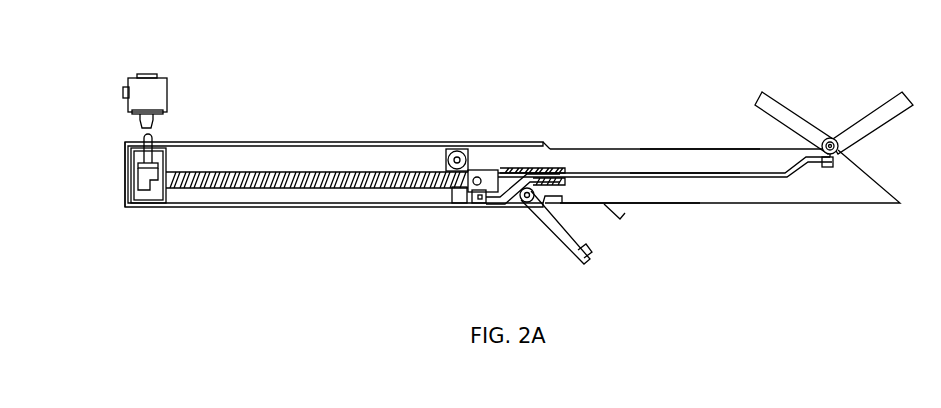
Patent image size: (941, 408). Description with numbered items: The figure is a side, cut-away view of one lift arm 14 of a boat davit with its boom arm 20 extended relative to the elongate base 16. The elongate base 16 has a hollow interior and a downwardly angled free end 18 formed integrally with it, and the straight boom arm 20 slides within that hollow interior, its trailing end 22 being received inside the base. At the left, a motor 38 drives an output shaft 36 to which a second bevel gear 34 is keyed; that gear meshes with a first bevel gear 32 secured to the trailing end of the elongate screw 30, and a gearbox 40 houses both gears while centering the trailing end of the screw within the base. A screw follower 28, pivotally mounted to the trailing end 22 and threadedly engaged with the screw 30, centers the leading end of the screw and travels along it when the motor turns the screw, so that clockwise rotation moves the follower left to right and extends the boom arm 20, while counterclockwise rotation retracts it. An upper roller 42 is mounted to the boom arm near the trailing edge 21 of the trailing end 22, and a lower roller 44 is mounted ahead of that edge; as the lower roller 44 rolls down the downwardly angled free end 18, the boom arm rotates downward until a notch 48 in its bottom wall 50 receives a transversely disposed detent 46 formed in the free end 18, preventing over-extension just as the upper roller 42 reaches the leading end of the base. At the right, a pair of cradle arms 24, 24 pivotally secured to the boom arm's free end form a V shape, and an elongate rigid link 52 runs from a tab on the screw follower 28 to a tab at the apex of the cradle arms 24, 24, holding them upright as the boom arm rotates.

The lift arm 14 is at (418, 86).
The elongate base 16 is at (332, 142).
The downwardly angled free end 18 is at (572, 250).
The boom arm 20 is at (690, 150).
The trailing edge 21 is at (452, 198).
The trailing end 22 is at (505, 153).
The cradle arms 24 is at (758, 95).
The screw follower 28 is at (482, 170).
The elongate screw 30 is at (257, 171).
The first bevel gear 32 is at (146, 190).
The second bevel gear 34 is at (141, 175).
The output shaft 36 is at (140, 140).
The motor 38 is at (164, 90).
The gearbox 40 is at (168, 198).
The upper roller 42 is at (448, 160).
The lower roller 44 is at (518, 207).
The detent 46 is at (594, 260).
The notch 48 is at (552, 219).
The bottom wall 50 is at (683, 204).
The rigid link 52 is at (659, 176).